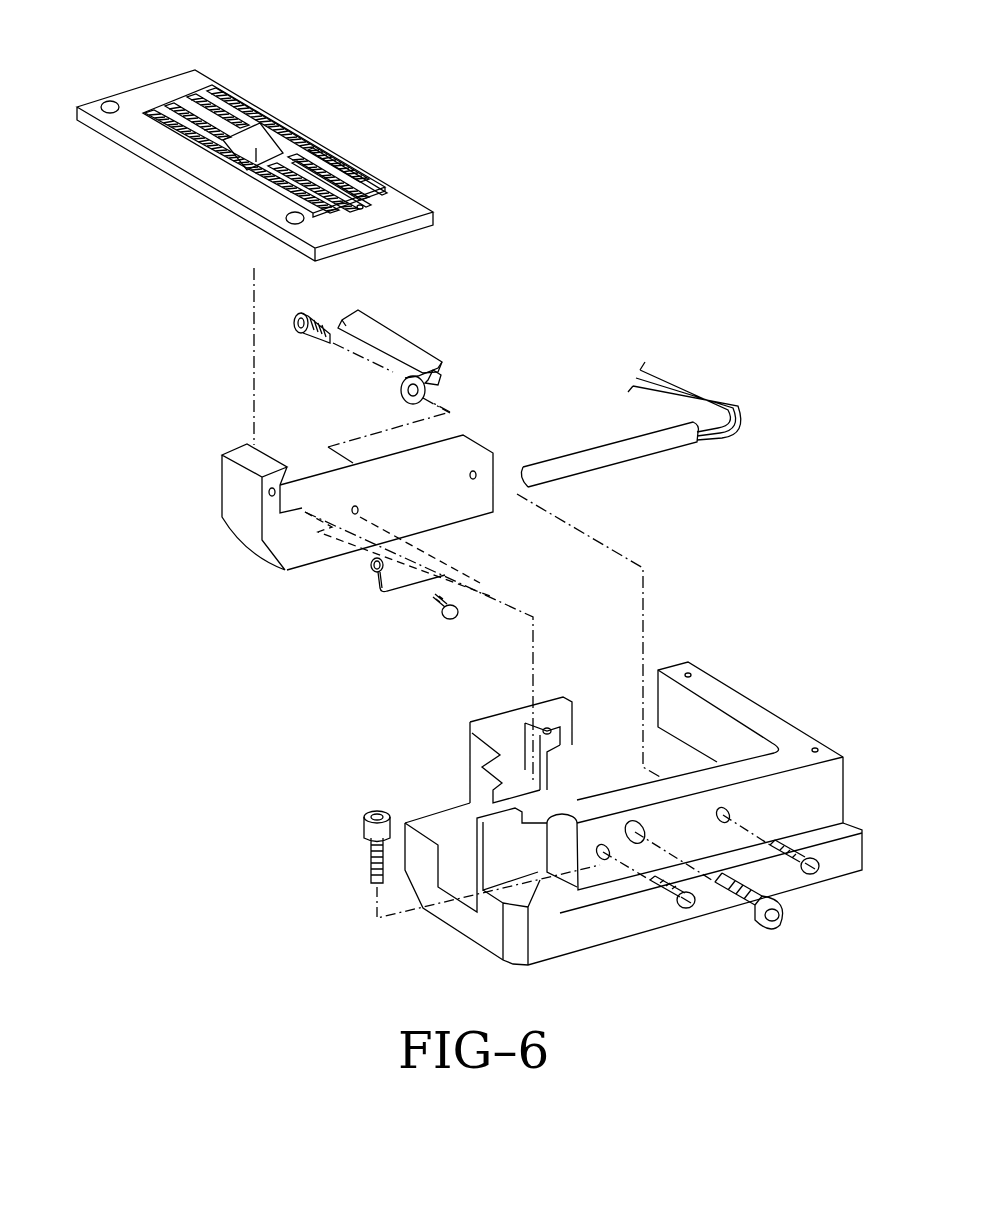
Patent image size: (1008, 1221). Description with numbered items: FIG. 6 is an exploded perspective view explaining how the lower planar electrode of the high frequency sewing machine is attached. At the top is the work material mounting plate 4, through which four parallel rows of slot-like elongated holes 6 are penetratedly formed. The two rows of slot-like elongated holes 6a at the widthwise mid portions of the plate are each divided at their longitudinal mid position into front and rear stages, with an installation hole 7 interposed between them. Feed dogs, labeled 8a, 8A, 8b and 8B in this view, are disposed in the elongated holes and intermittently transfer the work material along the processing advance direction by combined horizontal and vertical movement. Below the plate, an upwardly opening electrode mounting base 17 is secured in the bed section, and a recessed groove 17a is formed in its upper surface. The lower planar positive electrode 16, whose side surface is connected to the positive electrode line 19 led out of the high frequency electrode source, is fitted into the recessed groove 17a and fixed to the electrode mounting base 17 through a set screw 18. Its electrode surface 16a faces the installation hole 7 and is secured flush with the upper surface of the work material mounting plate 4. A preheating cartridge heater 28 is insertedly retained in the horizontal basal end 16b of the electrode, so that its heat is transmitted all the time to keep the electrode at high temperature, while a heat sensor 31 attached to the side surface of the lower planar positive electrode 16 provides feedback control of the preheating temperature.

The work material mounting plate 4 is at (160, 160).
The slot-like elongated holes 6 is at (385, 194).
The slot-like elongated holes 6a is at (360, 210).
The installation hole 7 is at (259, 150).
The slot 8a is at (300, 182).
The slot 8A is at (358, 163).
The slot 8b is at (206, 101).
The slot 8B is at (234, 94).
The lower planar positive electrode 16 is at (316, 593).
The electrode surface 16a is at (220, 456).
The horizontal basal end 16b is at (420, 515).
The electrode mounting base 17 is at (633, 772).
The recessed groove 17a is at (460, 892).
The set screw 18 is at (692, 908).
The positive electrode line 19 is at (390, 347).
The preheating cartridge heater 28 is at (580, 458).
The heat sensor 31 is at (392, 596).